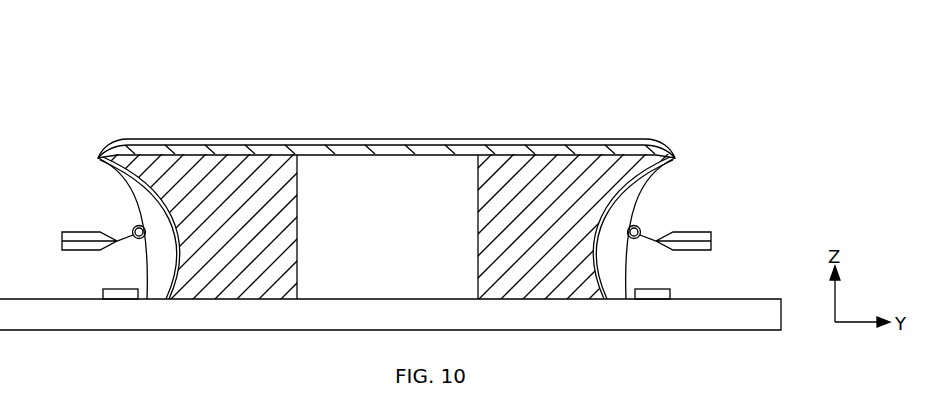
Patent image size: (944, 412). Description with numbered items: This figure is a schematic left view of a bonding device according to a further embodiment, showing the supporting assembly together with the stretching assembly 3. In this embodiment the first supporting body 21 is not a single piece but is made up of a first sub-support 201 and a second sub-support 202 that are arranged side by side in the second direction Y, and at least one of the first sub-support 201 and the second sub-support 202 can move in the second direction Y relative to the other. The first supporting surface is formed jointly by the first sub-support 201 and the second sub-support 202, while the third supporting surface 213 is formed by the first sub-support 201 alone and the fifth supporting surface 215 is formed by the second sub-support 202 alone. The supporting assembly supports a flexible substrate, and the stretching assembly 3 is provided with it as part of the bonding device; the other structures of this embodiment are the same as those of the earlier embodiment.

The first supporting body 21 is at (213, 70).
The first sub-support 201 is at (238, 160).
The second sub-support 202 is at (543, 162).
The third supporting surface 213 is at (130, 140).
The fifth supporting surface 215 is at (657, 148).
The stretching assembly 3 is at (650, 208).